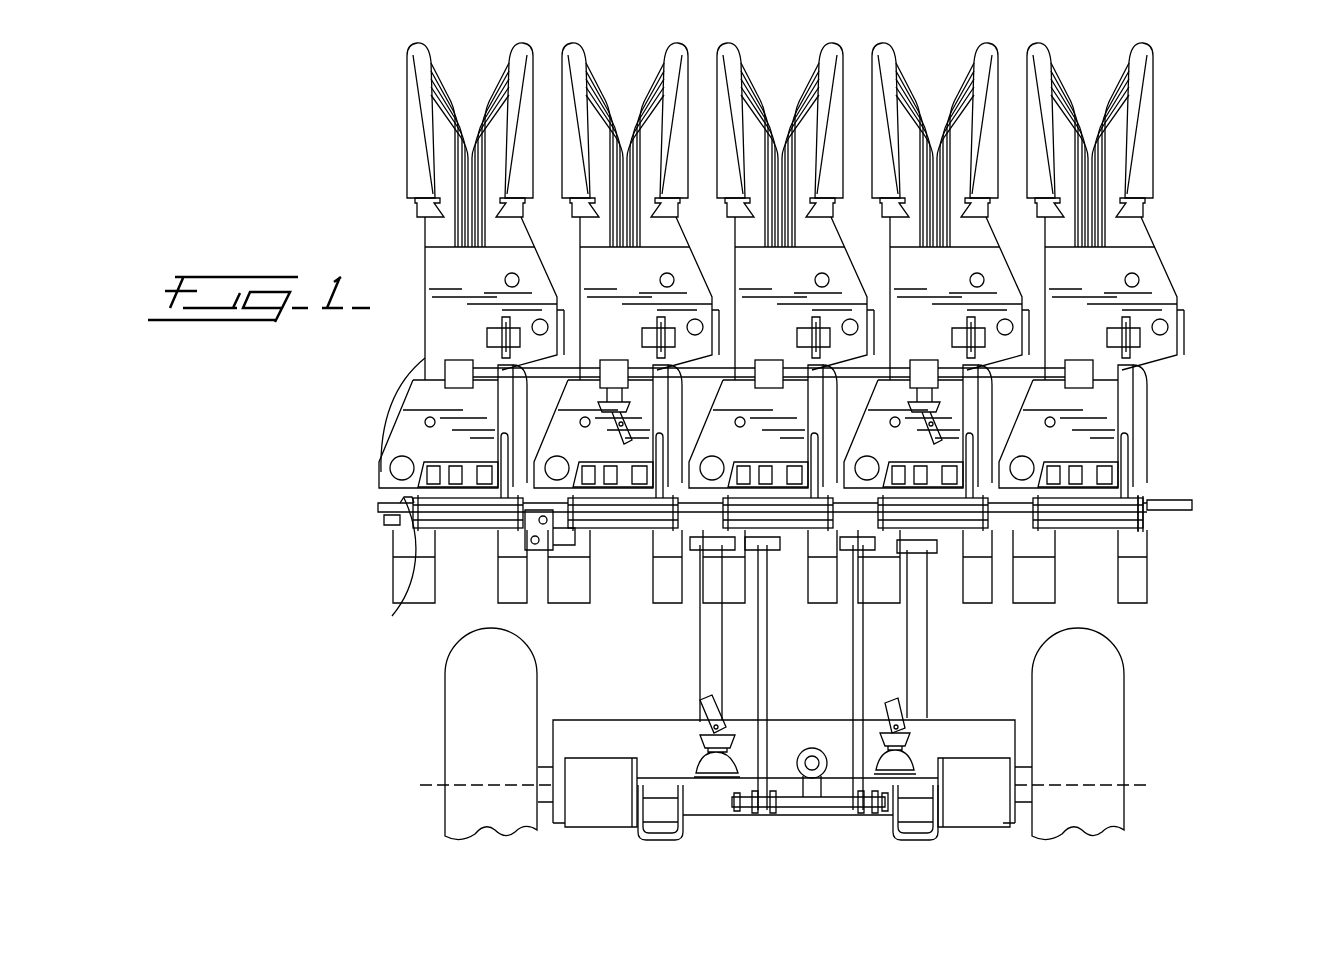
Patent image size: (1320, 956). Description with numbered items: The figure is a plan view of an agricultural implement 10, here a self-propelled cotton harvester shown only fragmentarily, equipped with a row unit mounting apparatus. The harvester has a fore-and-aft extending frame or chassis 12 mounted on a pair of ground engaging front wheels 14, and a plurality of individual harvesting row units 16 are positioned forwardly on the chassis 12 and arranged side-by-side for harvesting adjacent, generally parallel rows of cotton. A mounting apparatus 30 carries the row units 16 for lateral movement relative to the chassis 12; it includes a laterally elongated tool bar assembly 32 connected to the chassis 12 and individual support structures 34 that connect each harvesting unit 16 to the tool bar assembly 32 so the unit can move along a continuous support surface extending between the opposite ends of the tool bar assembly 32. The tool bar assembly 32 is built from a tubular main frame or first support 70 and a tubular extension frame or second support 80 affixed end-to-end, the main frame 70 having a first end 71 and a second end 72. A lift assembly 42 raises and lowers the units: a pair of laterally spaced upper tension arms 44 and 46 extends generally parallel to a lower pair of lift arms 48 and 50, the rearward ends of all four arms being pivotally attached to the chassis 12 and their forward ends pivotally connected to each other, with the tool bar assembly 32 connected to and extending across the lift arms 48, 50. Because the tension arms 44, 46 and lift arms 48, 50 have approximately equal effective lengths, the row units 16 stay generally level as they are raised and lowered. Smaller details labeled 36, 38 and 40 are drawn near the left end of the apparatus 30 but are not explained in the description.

The agricultural implement 10 is at (1272, 224).
The chassis 12 is at (958, 722).
The front wheels 14 is at (460, 708).
The harvesting row units 16 is at (720, 36).
The row unit mounting apparatus 30 is at (388, 535).
The tool bar assembly 32 is at (1182, 496).
The support structures 34 is at (447, 537).
The bracket 36 is at (398, 498).
The rod end 38 is at (376, 508).
The pin 40 is at (388, 520).
The lift assembly 42 is at (697, 668).
The upper tension arm 44 is at (764, 671).
The upper tension arm 46 is at (858, 648).
The lift arm 48 is at (712, 622).
The lift arm 50 is at (912, 700).
The main frame 70 is at (557, 507).
The first end 71 is at (497, 507).
The second end 72 is at (1195, 506).
The extension frame 80 is at (393, 500).